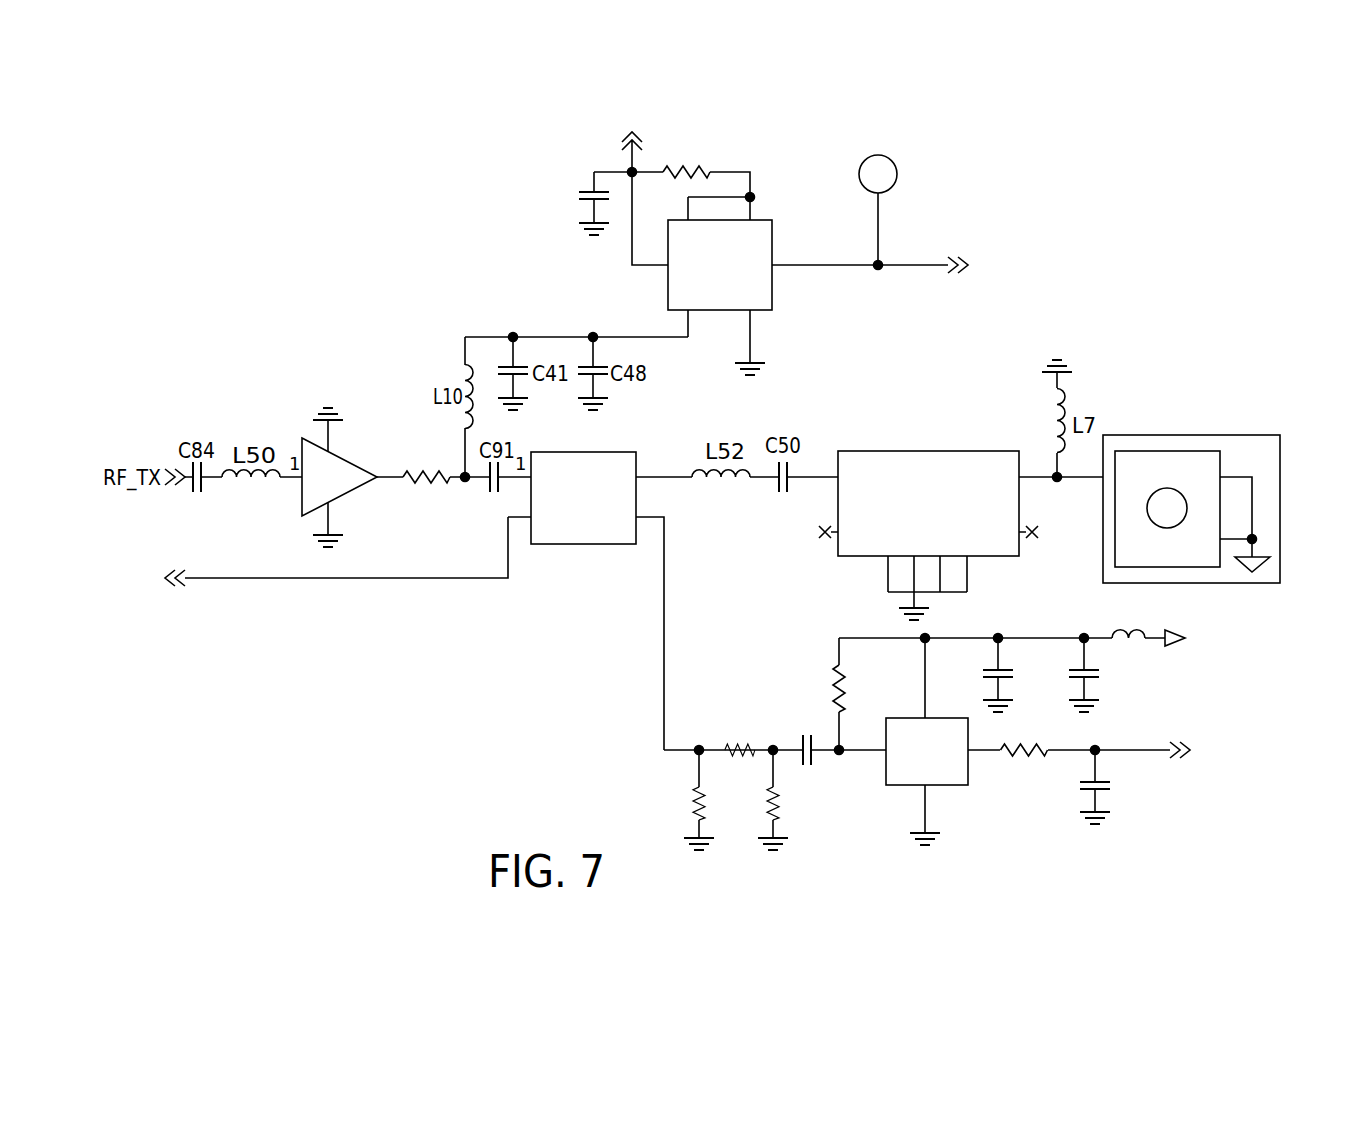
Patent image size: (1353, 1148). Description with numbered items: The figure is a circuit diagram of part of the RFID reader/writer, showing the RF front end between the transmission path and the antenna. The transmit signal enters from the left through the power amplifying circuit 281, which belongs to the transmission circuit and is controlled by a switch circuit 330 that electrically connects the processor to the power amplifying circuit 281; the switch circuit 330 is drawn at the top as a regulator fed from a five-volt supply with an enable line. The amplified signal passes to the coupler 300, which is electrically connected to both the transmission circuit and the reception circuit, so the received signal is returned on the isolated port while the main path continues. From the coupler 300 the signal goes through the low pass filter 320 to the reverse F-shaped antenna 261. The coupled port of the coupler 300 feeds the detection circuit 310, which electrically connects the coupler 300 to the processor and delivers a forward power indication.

The reverse F-shaped antenna 261 is at (1193, 435).
The power amplifying circuit 281 is at (361, 424).
The coupler 300 is at (577, 550).
The detection circuit 310 is at (968, 792).
The low pass filter 320 is at (925, 443).
The switch circuit 330 is at (758, 169).